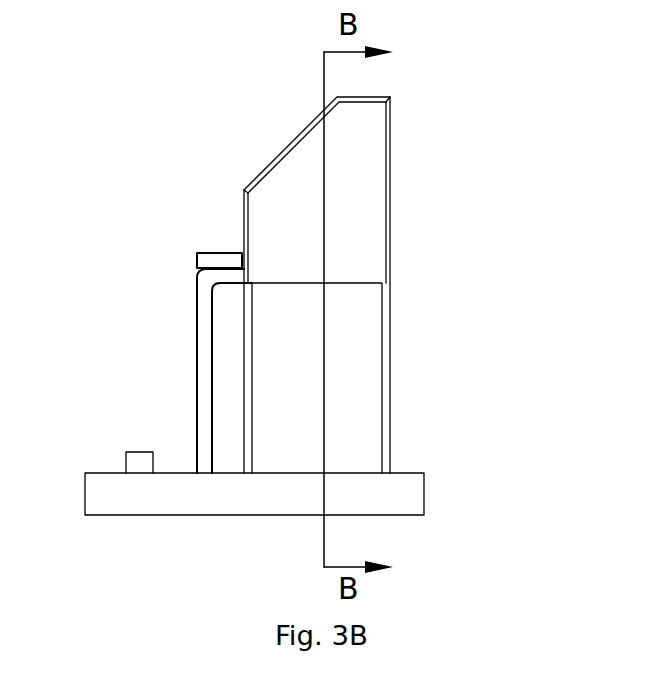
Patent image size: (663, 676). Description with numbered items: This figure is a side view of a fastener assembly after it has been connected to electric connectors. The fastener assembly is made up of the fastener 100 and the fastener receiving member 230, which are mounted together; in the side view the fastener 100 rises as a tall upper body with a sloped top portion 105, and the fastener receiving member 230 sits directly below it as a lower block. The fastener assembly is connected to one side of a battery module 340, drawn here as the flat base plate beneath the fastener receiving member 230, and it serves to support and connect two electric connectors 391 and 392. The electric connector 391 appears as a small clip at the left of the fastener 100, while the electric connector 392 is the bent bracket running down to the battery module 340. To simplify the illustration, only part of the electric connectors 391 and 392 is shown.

The fastener 100 is at (358, 245).
The sloped top portion of housing 105 is at (370, 129).
The fastener receiving member 230 is at (358, 383).
The battery module 340 is at (373, 498).
The electric connector 391 is at (212, 258).
The electric connector 392 is at (203, 360).